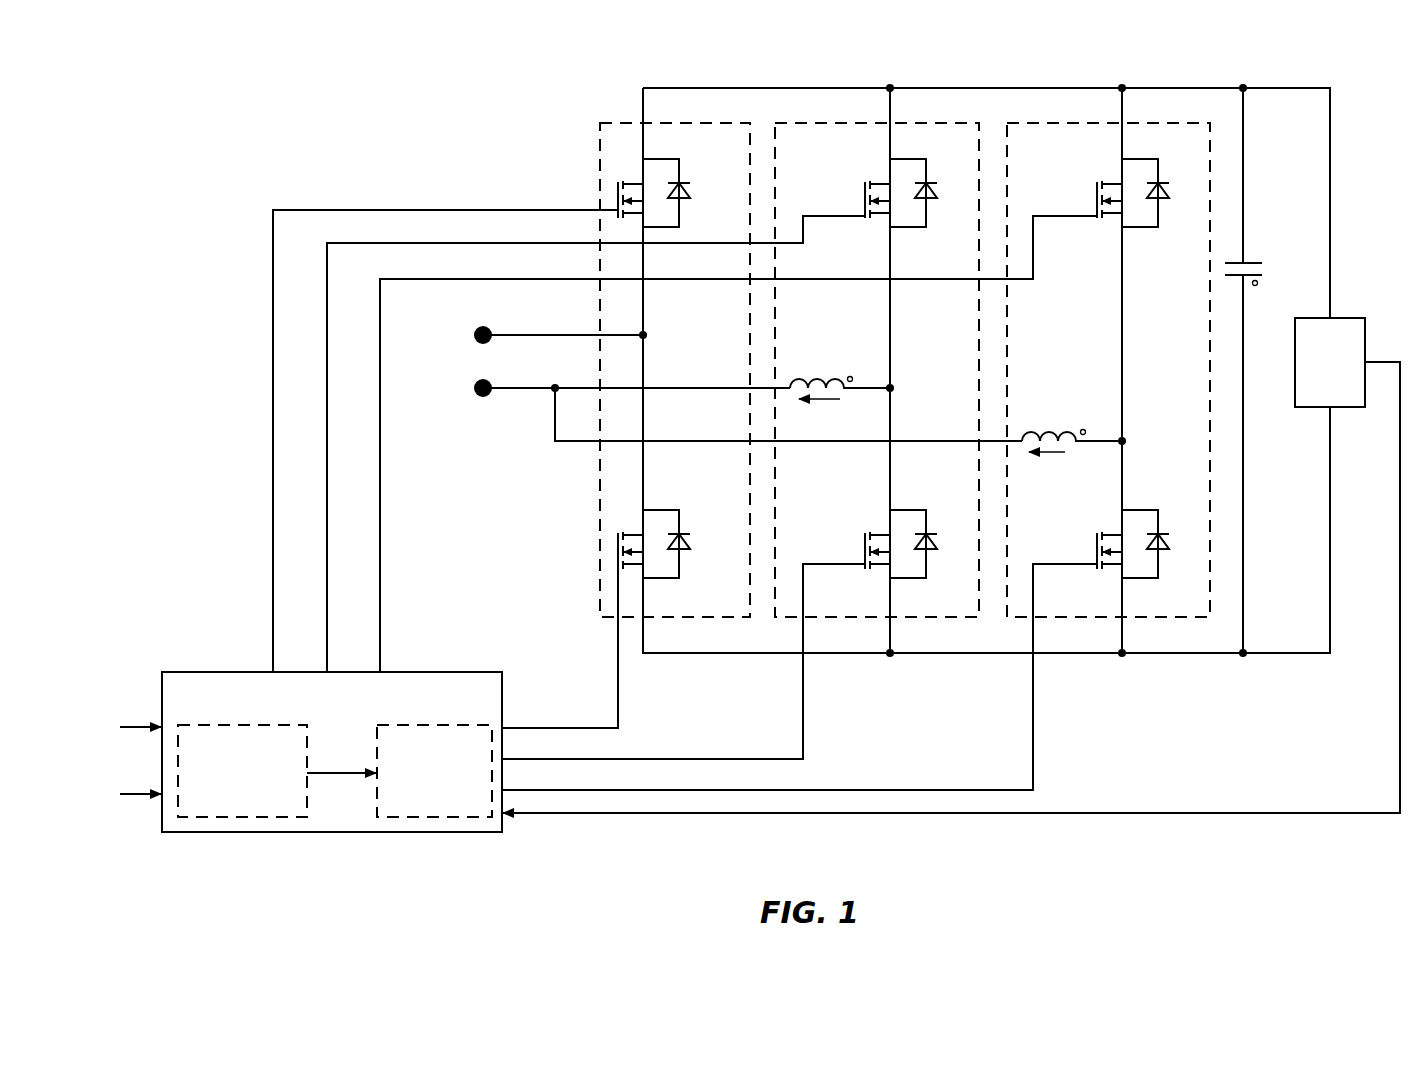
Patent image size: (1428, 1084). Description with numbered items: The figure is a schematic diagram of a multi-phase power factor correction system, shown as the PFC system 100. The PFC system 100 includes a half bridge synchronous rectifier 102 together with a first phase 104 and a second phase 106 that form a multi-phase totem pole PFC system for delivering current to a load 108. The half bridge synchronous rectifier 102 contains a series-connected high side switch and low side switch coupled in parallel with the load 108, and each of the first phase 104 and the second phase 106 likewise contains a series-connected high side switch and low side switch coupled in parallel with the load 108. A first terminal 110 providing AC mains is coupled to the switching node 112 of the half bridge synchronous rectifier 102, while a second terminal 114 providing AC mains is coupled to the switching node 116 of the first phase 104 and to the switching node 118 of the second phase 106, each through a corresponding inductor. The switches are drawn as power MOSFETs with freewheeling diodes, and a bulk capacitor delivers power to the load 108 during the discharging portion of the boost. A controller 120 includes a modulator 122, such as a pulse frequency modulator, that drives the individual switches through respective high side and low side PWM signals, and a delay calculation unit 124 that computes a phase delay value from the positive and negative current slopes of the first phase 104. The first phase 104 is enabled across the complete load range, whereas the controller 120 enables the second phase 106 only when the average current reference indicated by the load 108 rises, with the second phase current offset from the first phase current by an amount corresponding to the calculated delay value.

The PFC system 100 is at (222, 98).
The half bridge synchronous rectifier 102 is at (703, 156).
The first phase 104 is at (806, 156).
The second phase 106 is at (1033, 156).
The load 108 is at (1316, 383).
The first terminal 110 is at (496, 327).
The switching node 112 is at (658, 339).
The second terminal 114 is at (489, 404).
The switching node 116 is at (882, 381).
The switching node 118 is at (1116, 432).
The controller 120 is at (335, 707).
The modulator 122 is at (422, 789).
The delay calculation unit 124 is at (230, 813).